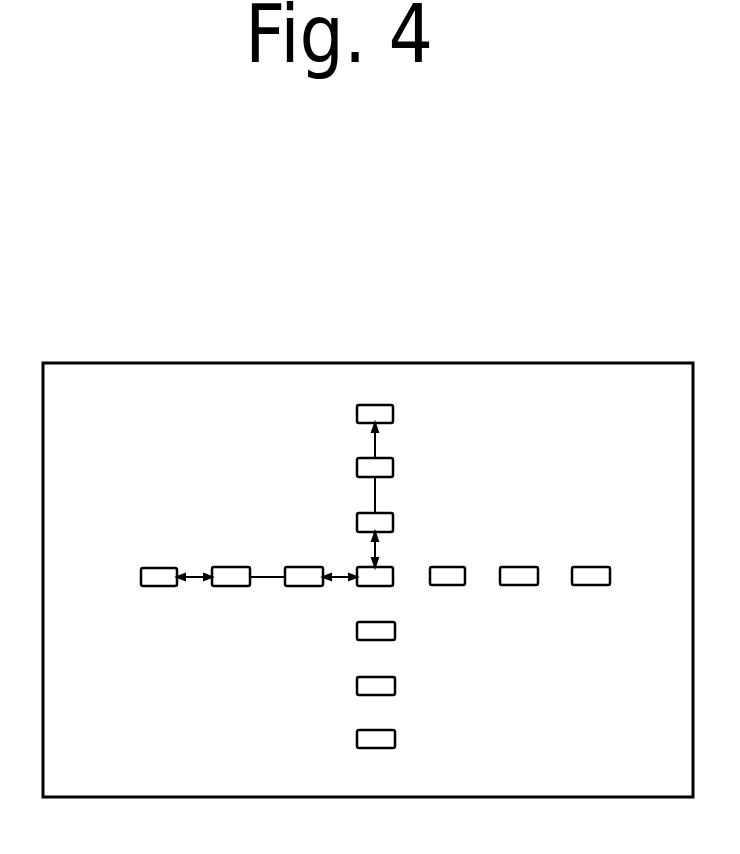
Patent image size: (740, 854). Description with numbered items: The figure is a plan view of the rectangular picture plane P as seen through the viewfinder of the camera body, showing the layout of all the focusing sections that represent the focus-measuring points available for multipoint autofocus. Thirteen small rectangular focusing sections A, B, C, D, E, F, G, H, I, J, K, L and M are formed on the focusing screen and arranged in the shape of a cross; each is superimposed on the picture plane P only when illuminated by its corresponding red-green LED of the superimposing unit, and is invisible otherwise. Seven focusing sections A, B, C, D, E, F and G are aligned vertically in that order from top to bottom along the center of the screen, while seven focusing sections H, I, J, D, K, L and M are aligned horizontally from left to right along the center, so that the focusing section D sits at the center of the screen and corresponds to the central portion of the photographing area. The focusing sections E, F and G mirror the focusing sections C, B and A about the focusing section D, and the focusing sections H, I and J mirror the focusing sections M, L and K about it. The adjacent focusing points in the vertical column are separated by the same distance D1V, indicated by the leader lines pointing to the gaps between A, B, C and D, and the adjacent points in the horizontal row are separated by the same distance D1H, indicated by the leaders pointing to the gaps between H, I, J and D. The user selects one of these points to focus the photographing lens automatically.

The picture plane P is at (623, 387).
The focusing section A is at (354, 409).
The focusing section B is at (354, 464).
The focusing section C is at (354, 522).
The focusing section D is at (387, 594).
The focusing section E is at (398, 636).
The focusing section F is at (398, 692).
The focusing section G is at (399, 749).
The focusing section H is at (159, 611).
The focusing section I is at (231, 610).
The focusing section J is at (304, 610).
The focusing section K is at (450, 545).
The focusing section L is at (520, 545).
The focusing section M is at (592, 545).
The vertical distance between adjacent focusing points D1V is at (381, 496).
The horizontal distance between adjacent focusing points D1H is at (340, 566).